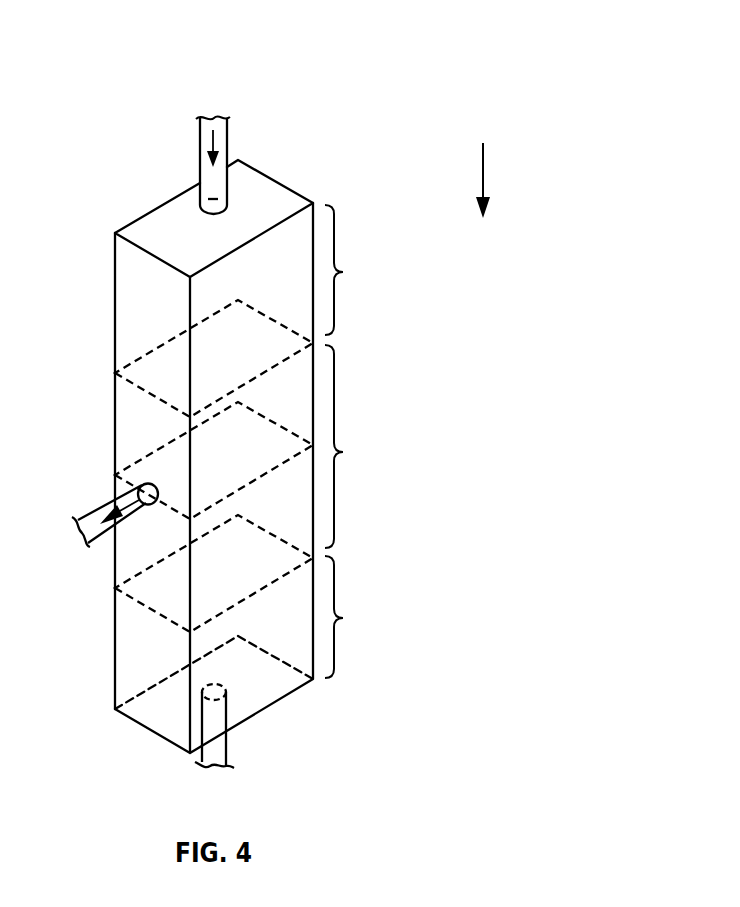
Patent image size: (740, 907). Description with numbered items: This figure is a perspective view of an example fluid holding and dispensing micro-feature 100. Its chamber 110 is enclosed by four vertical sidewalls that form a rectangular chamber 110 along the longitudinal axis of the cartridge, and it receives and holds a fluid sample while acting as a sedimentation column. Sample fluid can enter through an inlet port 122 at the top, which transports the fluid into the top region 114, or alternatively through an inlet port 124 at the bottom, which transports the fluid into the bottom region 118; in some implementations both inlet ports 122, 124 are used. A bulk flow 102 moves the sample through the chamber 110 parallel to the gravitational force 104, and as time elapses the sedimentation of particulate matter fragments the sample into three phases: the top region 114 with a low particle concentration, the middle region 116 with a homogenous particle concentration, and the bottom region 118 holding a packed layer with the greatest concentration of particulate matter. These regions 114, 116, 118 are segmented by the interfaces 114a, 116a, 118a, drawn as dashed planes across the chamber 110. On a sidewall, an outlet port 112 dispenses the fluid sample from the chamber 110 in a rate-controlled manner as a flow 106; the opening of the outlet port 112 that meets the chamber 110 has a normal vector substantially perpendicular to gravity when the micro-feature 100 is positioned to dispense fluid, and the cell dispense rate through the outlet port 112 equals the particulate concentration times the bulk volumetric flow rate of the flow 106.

The fluid holding and dispensing micro-feature 100 is at (573, 53).
The bulk flow 102 is at (227, 152).
The gravitational force 104 is at (483, 153).
The flow 106 is at (107, 537).
The chamber 110 is at (134, 222).
The outlet port 112 is at (143, 485).
The top region 114 is at (353, 270).
The interface 114a is at (238, 300).
The middle region 116 is at (353, 446).
The interface 116a is at (238, 402).
The bottom region 118 is at (353, 617).
The interface 118a is at (238, 515).
The inlet port 122 is at (200, 132).
The inlet port 124 is at (200, 752).